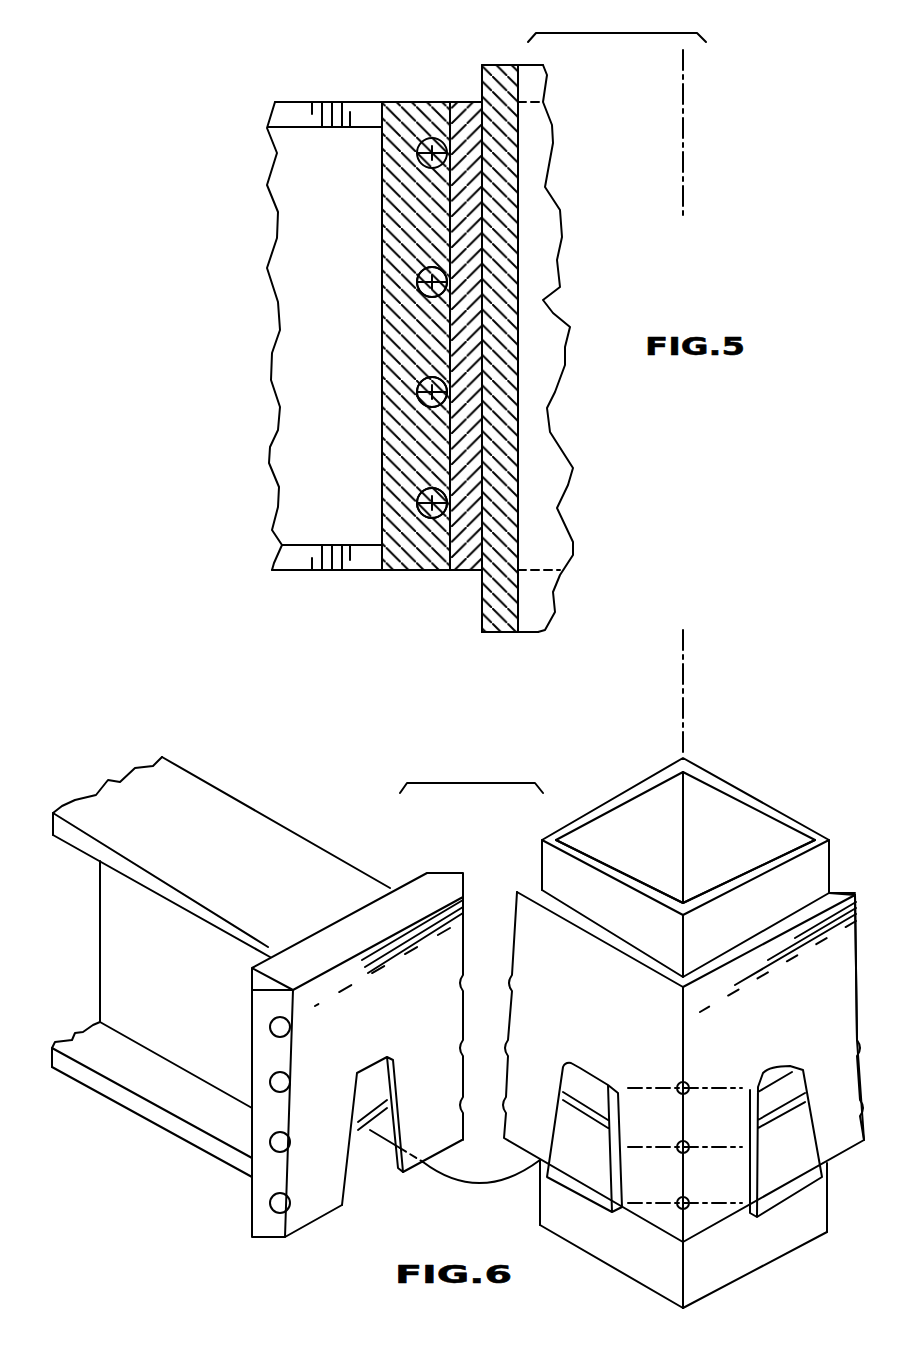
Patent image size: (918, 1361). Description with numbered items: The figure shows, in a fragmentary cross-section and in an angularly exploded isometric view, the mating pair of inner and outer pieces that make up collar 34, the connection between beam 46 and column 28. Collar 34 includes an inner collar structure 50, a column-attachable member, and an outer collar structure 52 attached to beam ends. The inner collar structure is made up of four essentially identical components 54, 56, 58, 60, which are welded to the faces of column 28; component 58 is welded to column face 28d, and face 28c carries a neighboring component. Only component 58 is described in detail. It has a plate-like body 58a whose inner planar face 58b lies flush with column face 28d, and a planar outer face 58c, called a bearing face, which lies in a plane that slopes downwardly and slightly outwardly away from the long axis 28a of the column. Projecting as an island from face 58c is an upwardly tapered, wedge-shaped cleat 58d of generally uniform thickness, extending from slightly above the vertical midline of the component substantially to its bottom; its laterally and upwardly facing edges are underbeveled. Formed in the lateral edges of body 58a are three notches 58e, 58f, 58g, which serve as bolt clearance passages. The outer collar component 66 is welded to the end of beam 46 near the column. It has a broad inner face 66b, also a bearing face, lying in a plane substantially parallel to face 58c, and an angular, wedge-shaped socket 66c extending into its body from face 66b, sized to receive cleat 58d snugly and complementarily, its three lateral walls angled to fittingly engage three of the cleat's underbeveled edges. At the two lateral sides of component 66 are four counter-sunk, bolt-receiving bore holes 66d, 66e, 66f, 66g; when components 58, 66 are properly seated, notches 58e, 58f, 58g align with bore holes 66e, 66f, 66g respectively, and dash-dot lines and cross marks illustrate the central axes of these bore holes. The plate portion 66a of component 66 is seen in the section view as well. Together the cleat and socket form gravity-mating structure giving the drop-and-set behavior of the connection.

In FIG. 5, the column 28 is at (603, 377).
In FIG. 6, the column 28 is at (685, 802).
In FIG. 5, the long axis of column 28a is at (683, 153).
In FIG. 6, the long axis of column 28a is at (687, 710).
In FIG. 6, the column face 28c is at (752, 907).
In FIG. 5, the column face 28d is at (480, 617).
In FIG. 6, the column face 28d is at (620, 910).
In FIG. 5, the collar 34 is at (305, 236).
In FIG. 5, the beam 46 is at (286, 336).
In FIG. 6, the beam 46 is at (290, 830).
In FIG. 5, the inner collar structure 50 is at (455, 572).
In FIG. 6, the inner collar structure 50 is at (863, 953).
In FIG. 5, the outer collar structure 52 is at (395, 572).
In FIG. 6, the inner collar component 54 is at (844, 880).
In FIG. 6, the inner collar component 56 is at (845, 1027).
In FIG. 5, the inner collar component 58 is at (462, 286).
In FIG. 6, the inner collar component 58 is at (667, 1073).
In FIG. 5, the component body 58a is at (473, 217).
In FIG. 6, the component body 58a is at (658, 1012).
In FIG. 5, the inner planar face 58b is at (502, 97).
In FIG. 5, the outer bearing face 58c is at (440, 330).
In FIG. 6, the outer bearing face 58c is at (615, 1028).
In FIG. 6, the cleat 58d is at (546, 1165).
In FIG. 5, the notch 58e is at (420, 283).
In FIG. 6, the notch 58e is at (756, 1056).
In FIG. 5, the notch 58f is at (420, 393).
In FIG. 6, the notch 58f is at (683, 1141).
In FIG. 5, the notch 58g is at (420, 503).
In FIG. 6, the notch 58g is at (683, 1210).
In FIG. 6, the inner collar component 60 is at (525, 885).
In FIG. 5, the outer collar component 66 is at (475, 307).
In FIG. 6, the outer collar component 66 is at (341, 1025).
In FIG. 5, the end plate face 66a is at (382, 192).
In FIG. 5, the inner bearing face 66b is at (450, 237).
In FIG. 6, the inner bearing face 66b is at (392, 1028).
In FIG. 6, the socket 66c is at (362, 1157).
In FIG. 5, the bolt-receiving bore hole 66d is at (440, 152).
In FIG. 6, the bolt-receiving bore hole 66d is at (270, 1027).
In FIG. 5, the bolt-receiving bore hole 66e is at (447, 287).
In FIG. 6, the bolt-receiving bore hole 66e is at (270, 1082).
In FIG. 5, the bolt-receiving bore hole 66f is at (447, 393).
In FIG. 6, the bolt-receiving bore hole 66f is at (270, 1143).
In FIG. 5, the bolt-receiving bore hole 66g is at (447, 503).
In FIG. 6, the bolt-receiving bore hole 66g is at (270, 1203).